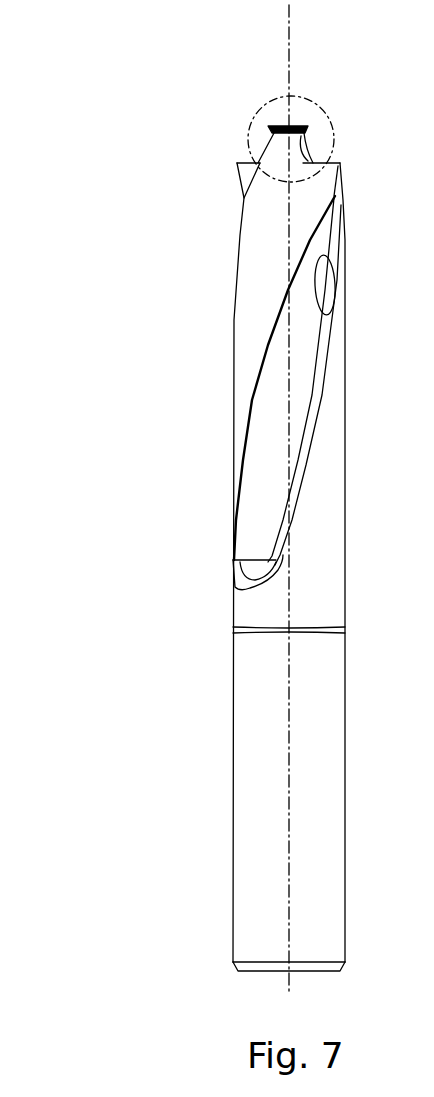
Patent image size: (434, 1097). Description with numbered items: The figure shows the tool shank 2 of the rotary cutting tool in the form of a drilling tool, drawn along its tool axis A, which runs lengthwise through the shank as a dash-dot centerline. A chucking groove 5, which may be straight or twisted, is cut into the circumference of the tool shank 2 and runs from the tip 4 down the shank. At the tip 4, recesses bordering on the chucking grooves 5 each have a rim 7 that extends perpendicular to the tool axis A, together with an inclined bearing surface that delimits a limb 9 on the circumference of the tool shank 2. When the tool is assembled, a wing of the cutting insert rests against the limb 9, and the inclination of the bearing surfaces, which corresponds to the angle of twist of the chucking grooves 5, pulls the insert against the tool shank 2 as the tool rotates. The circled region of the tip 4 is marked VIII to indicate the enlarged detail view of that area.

The tool shank 2 is at (192, 530).
The tip 4 is at (306, 88).
The chucking groove 5 is at (313, 343).
The rim 7 is at (336, 160).
The limb 9 is at (301, 126).
The tool axis A is at (289, 30).
The detail view indicator VIII is at (250, 128).